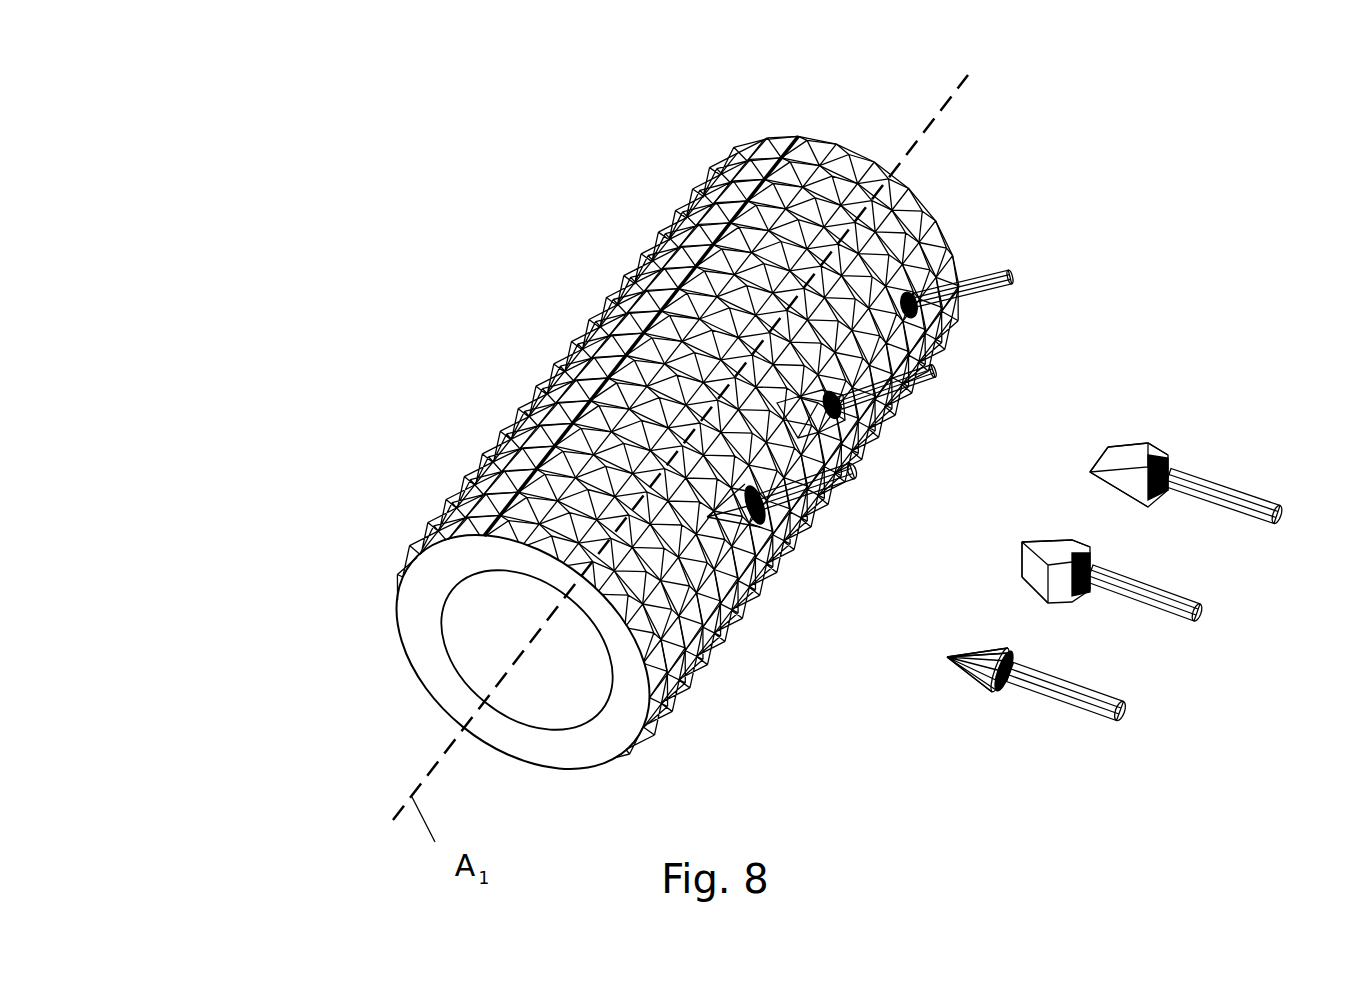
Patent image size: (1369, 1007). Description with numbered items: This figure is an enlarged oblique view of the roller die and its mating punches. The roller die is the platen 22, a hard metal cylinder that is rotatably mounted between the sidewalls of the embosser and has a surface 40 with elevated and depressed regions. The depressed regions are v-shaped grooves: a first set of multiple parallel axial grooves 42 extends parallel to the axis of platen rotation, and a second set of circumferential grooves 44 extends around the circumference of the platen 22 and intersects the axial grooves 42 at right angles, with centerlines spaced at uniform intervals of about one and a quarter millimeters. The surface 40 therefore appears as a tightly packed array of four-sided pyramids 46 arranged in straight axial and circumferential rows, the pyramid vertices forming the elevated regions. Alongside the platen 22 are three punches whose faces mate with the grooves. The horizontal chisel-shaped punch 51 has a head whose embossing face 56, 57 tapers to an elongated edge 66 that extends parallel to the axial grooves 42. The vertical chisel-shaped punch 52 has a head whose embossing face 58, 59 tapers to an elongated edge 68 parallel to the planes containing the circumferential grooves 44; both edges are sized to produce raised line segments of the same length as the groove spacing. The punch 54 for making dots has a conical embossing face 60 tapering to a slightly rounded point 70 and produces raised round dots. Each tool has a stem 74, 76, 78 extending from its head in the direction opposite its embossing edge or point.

The platen 22 is at (670, 442).
The surface 40 is at (940, 245).
The axial grooves 42 is at (400, 575).
The circumferential grooves 44 is at (690, 693).
The four-sided pyramids 46 is at (848, 163).
The horizontal chisel-shaped punch 51 is at (1020, 279).
The vertical chisel-shaped punch 52 is at (940, 373).
The punch suitable for making dots 54 is at (860, 476).
The embossing face 56 is at (1163, 443).
The embossing face 57 is at (1102, 483).
The embossing face 58 is at (1038, 538).
The embossing face 59 is at (1038, 575).
The embossing face 60 is at (963, 663).
The elongated edge 66 is at (1100, 453).
The elongated edge 68 is at (1022, 558).
The slightly rounded point 70 is at (947, 657).
The stem 74 is at (1285, 505).
The stem 76 is at (1200, 598).
The stem 78 is at (1122, 706).